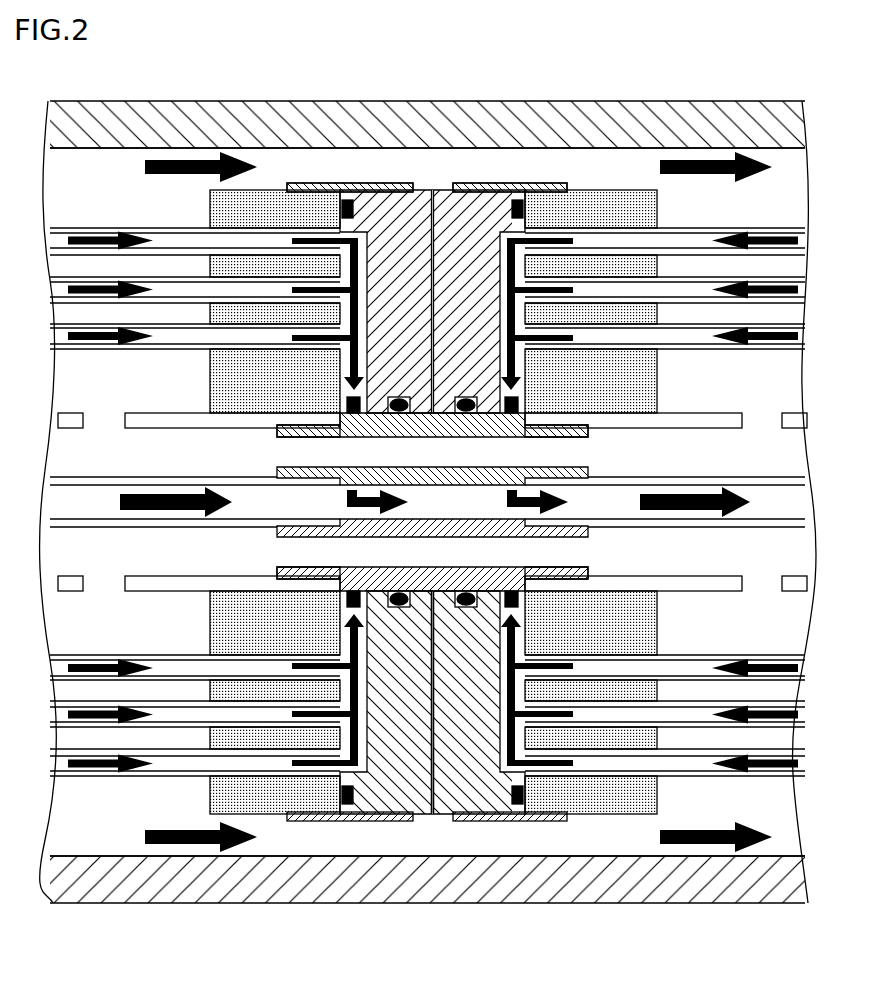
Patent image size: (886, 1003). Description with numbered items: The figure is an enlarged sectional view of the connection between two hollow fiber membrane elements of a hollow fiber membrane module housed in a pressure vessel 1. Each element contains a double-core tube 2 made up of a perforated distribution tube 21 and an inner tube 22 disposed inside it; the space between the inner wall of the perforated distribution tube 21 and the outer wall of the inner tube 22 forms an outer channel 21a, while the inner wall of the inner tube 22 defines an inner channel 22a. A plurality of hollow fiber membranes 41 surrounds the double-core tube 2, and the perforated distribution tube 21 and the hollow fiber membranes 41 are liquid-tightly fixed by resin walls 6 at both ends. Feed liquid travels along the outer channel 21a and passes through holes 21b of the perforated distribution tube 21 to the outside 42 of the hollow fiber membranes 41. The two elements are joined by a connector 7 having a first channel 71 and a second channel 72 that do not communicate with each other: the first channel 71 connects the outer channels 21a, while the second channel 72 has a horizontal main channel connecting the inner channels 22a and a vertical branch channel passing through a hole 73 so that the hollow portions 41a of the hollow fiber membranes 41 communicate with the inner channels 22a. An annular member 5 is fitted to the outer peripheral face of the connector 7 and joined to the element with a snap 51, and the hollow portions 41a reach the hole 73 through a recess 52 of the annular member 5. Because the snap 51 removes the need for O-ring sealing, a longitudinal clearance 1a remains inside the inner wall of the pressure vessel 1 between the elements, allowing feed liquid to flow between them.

The pressure vessel 1 is at (197, 118).
The clearance 1a is at (545, 165).
The double-core tube 2 is at (424, 523).
The perforated distribution tube 21 is at (145, 585).
The outer channel 21a is at (68, 553).
The holes 21b is at (104, 585).
The inner tube 22 is at (185, 523).
The inner channel 22a is at (253, 500).
The hollow fiber membranes 41 is at (71, 232).
The hollow portions 41a is at (175, 242).
The outside of the hollow fiber membranes 42 is at (692, 270).
The annular member 5 is at (404, 270).
The snap 51 is at (351, 186).
The recess 52 is at (364, 735).
The resin walls 6 is at (272, 805).
The connector 7 is at (572, 452).
The first channel 71 is at (587, 435).
The second channel 72 is at (428, 816).
The hole 73 is at (497, 186).